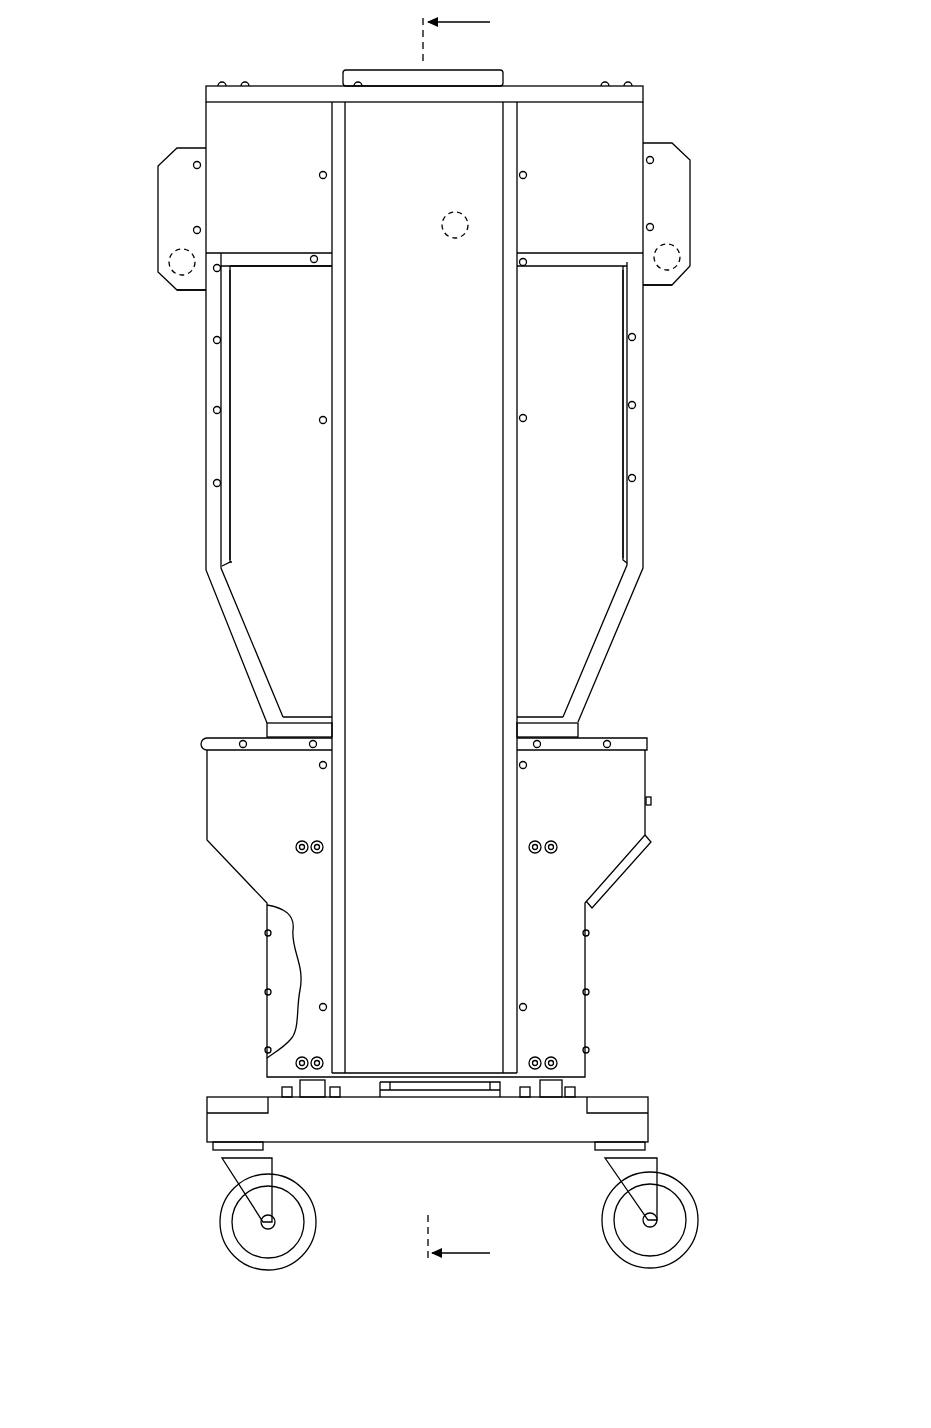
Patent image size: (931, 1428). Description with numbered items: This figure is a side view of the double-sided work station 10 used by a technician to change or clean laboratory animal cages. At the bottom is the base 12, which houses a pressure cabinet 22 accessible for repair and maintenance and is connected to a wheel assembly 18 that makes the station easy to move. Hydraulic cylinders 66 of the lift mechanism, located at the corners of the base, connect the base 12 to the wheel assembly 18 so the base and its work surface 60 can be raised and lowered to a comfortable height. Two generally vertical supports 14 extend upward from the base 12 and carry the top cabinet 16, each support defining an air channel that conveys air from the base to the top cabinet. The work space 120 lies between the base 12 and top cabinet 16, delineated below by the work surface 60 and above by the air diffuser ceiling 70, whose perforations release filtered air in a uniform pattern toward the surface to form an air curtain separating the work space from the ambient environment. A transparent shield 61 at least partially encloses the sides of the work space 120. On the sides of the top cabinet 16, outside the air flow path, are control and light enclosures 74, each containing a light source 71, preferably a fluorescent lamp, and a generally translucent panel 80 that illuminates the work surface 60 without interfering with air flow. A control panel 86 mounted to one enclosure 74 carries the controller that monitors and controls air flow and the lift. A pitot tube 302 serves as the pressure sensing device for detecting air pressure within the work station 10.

The work station 10 is at (768, 432).
The base 12 is at (205, 803).
The vertical support 14 is at (375, 672).
The top cabinet 16 is at (275, 82).
The wheel assembly 18 is at (207, 1128).
The pressure cabinet 22 is at (292, 988).
The work surface 60 is at (317, 718).
The transparent shield 61 is at (250, 467).
The hydraulic cylinder 66 is at (322, 1085).
The air diffuser ceiling 70 is at (262, 266).
The light source 71 is at (165, 268).
The control and light enclosure 74 is at (158, 206).
The translucent panel 80 is at (192, 290).
The control panel 86 is at (693, 210).
The work space 120 is at (306, 538).
The pitot tube 302 is at (456, 212).